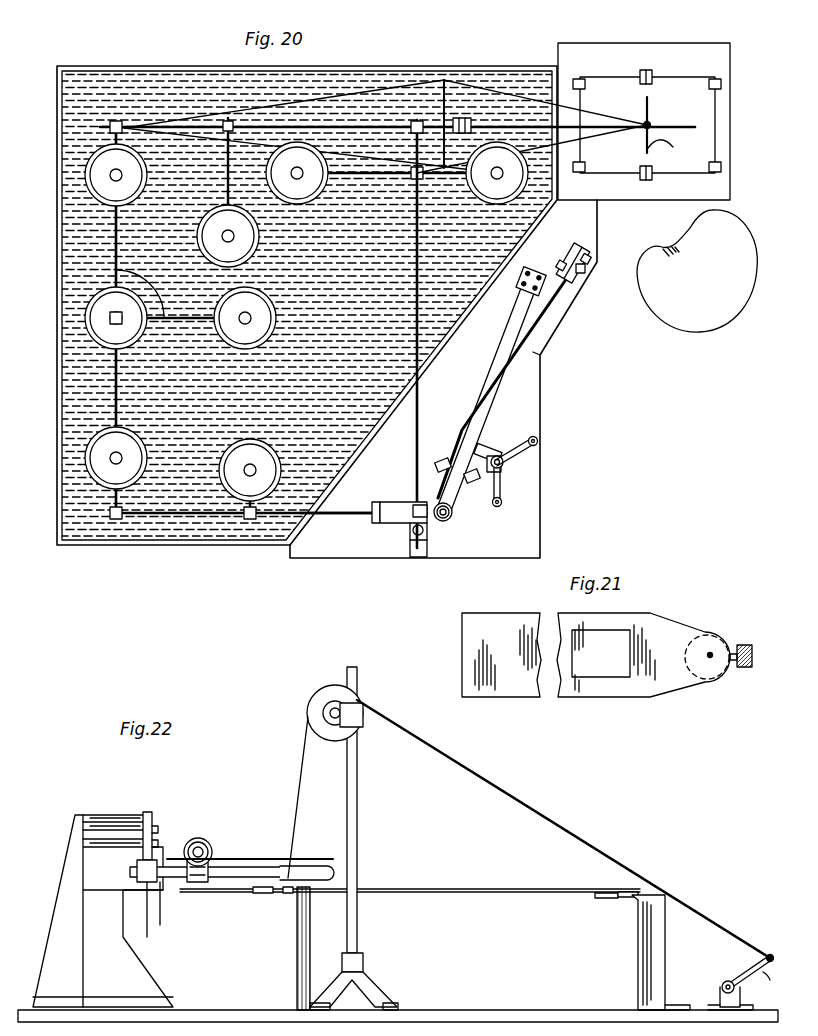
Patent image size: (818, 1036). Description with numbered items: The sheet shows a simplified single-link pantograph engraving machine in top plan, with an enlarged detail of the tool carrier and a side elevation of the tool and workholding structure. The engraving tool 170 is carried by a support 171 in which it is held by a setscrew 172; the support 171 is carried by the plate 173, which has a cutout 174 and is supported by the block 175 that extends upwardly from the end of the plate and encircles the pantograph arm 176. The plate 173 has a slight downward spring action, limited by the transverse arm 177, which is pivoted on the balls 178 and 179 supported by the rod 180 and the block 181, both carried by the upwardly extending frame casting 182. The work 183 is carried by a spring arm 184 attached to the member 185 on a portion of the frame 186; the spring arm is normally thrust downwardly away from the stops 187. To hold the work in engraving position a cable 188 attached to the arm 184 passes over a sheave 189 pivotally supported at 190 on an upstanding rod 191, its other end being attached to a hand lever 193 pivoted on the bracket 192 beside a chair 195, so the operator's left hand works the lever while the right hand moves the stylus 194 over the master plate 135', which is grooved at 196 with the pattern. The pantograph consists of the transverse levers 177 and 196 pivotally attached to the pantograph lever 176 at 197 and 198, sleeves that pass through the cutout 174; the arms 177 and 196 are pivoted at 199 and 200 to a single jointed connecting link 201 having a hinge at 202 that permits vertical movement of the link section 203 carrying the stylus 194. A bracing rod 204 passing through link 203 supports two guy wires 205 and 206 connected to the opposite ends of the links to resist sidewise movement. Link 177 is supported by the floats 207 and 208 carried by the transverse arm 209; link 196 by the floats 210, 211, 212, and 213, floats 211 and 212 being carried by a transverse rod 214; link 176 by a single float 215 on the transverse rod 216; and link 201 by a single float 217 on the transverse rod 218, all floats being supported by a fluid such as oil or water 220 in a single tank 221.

In FIG. 20, the master plate 135' is at (671, 121).
In FIG. 20, the engraving tool 170 is at (450, 519).
In FIG. 21, the engraving tool 170 is at (712, 655).
In FIG. 22, the engraving tool 170 is at (199, 838).
In FIG. 21, the support 171 is at (698, 683).
In FIG. 21, the setscrew 172 is at (752, 665).
In FIG. 20, the plate 173 is at (393, 502).
In FIG. 21, the plate 173 is at (530, 690).
In FIG. 22, the plate 173 is at (238, 855).
In FIG. 21, the cutout 174 is at (598, 678).
In FIG. 20, the block 175 is at (377, 524).
In FIG. 20, the pantograph arm 176 is at (337, 516).
In FIG. 20, the transverse arm 177 is at (419, 400).
In FIG. 22, the transverse arm 177 is at (272, 868).
In FIG. 22, the ball 178 is at (158, 860).
In FIG. 22, the ball 179 is at (157, 892).
In FIG. 22, the rod 180 is at (148, 812).
In FIG. 22, the block 181 is at (148, 925).
In FIG. 20, the frame casting 182 is at (420, 558).
In FIG. 22, the frame casting 182 is at (80, 860).
In FIG. 20, the work 183 is at (430, 520).
In FIG. 22, the work 183 is at (196, 883).
In FIG. 20, the spring arm 184 is at (507, 343).
In FIG. 22, the spring arm 184 is at (452, 890).
In FIG. 20, the member 185 is at (531, 272).
In FIG. 22, the member 185 is at (605, 892).
In FIG. 20, the frame 186 is at (570, 305).
In FIG. 22, the frame 186 is at (600, 1016).
In FIG. 20, the stops 187 is at (449, 460).
In FIG. 22, the stops 187 is at (287, 893).
In FIG. 20, the cable 188 is at (522, 365).
In FIG. 22, the cable 188 is at (301, 772).
In FIG. 20, the sheave 189 is at (498, 455).
In FIG. 22, the sheave 189 is at (320, 693).
In FIG. 20, the pivot 190 is at (503, 500).
In FIG. 22, the pivot 190 is at (338, 728).
In FIG. 20, the upstanding rod 191 is at (503, 465).
In FIG. 22, the upstanding rod 191 is at (358, 790).
In FIG. 20, the bracket 192 is at (586, 276).
In FIG. 22, the bracket 192 is at (722, 987).
In FIG. 20, the hand lever 193 is at (590, 256).
In FIG. 22, the hand lever 193 is at (748, 968).
In FIG. 20, the stylus 194 is at (648, 124).
In FIG. 20, the chair 195 is at (733, 233).
In FIG. 20, the transverse lever 196 is at (116, 385).
In FIG. 20, the pivotal connection 197 is at (113, 520).
In FIG. 20, the pivotal connection 198 is at (448, 514).
In FIG. 20, the pivotal connection 199 is at (113, 122).
In FIG. 20, the pivotal connection 200 is at (418, 119).
In FIG. 20, the connecting link 201 is at (360, 126).
In FIG. 20, the hinge 202 is at (466, 117).
In FIG. 20, the link section 203 is at (583, 120).
In FIG. 20, the bracing rod 204 is at (447, 94).
In FIG. 20, the guy wire 205 is at (513, 94).
In FIG. 20, the guy wire 206 is at (333, 150).
In FIG. 20, the float 207 is at (297, 173).
In FIG. 20, the float 208 is at (518, 190).
In FIG. 20, the transverse arm 209 is at (388, 171).
In FIG. 20, the float 210 is at (100, 478).
In FIG. 20, the float 211 is at (95, 318).
In FIG. 20, the float 212 is at (245, 318).
In FIG. 20, the float 213 is at (95, 172).
In FIG. 20, the transverse rod 214 is at (116, 271).
In FIG. 20, the float 215 is at (234, 490).
In FIG. 20, the transverse rod 216 is at (262, 498).
In FIG. 20, the float 217 is at (228, 236).
In FIG. 20, the transverse rod 218 is at (227, 152).
In FIG. 20, the fluid 220 is at (90, 440).
In FIG. 20, the tank 221 is at (60, 468).